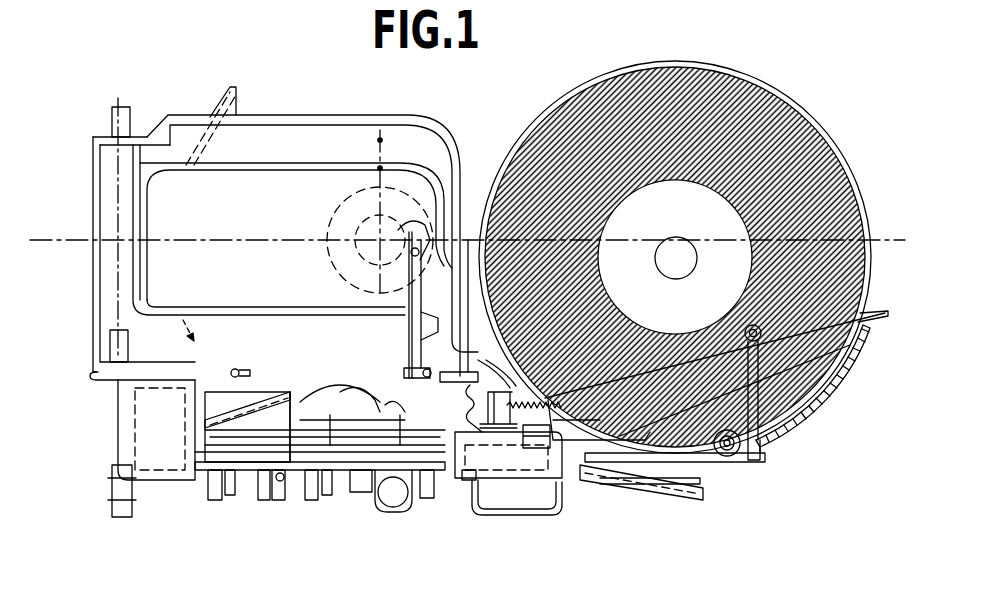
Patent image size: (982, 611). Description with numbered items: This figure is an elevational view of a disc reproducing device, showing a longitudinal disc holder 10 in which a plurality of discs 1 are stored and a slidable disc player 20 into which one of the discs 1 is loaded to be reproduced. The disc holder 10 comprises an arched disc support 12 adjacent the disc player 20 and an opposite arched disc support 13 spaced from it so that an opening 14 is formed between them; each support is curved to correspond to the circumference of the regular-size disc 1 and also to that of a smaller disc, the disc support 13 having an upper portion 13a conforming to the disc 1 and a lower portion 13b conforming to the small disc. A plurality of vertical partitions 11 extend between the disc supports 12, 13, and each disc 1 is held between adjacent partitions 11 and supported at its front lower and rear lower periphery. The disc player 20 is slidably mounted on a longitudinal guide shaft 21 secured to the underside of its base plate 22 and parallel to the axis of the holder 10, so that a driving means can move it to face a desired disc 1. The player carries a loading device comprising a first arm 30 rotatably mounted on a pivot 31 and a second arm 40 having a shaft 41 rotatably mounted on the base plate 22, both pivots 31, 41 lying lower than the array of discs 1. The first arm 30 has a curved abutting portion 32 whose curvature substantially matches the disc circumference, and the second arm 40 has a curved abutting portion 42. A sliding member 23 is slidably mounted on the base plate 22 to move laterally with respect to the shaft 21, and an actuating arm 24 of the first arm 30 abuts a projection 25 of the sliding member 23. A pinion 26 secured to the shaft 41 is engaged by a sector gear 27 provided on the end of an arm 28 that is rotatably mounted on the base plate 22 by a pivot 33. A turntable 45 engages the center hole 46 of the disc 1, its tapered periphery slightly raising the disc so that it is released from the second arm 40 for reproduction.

The disc 1 is at (760, 80).
The disc holder 10 is at (786, 512).
The vertical partition 11 is at (850, 362).
The disc support 12 is at (624, 442).
The disc support 13 is at (800, 416).
The upper portion 13a is at (832, 388).
The lower portion 13b is at (768, 448).
The opening 14 is at (718, 480).
The disc player 20 is at (312, 100).
The guide shaft 21 is at (393, 495).
The base plate 22 is at (248, 472).
The sliding member 23 is at (520, 480).
The actuating arm 24 is at (480, 414).
The projection 25 is at (580, 514).
The pinion 26 is at (360, 472).
The sector gear 27 is at (365, 395).
The arm 28 is at (280, 392).
The first arm 30 is at (590, 482).
The pivot 31 is at (470, 482).
The curved abutting portion 32 is at (690, 482).
The pivot 33 is at (212, 392).
The second arm 40 is at (412, 255).
The shaft 41 is at (428, 500).
The curved abutting portion 42 is at (470, 240).
The turntable 45 is at (330, 222).
The center hole 46 is at (662, 252).